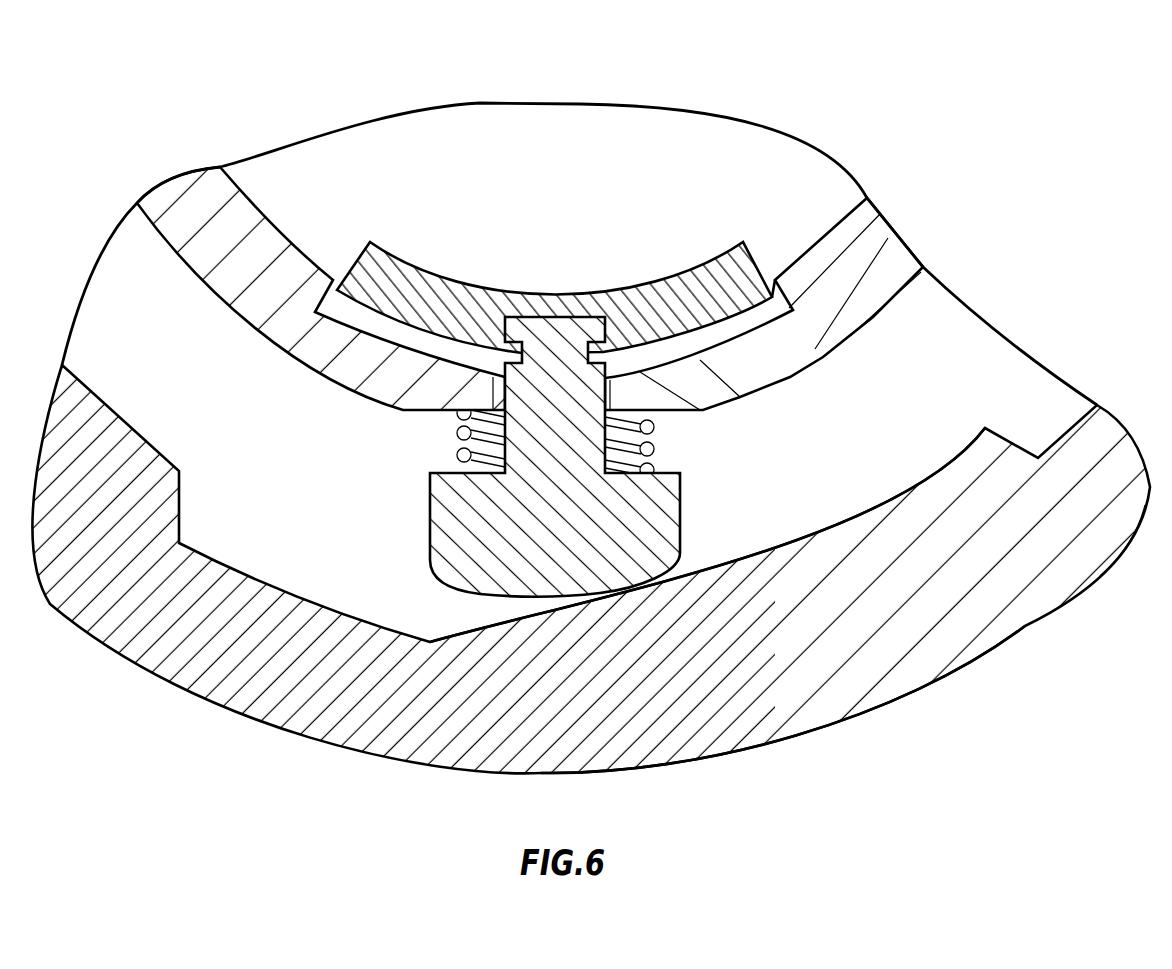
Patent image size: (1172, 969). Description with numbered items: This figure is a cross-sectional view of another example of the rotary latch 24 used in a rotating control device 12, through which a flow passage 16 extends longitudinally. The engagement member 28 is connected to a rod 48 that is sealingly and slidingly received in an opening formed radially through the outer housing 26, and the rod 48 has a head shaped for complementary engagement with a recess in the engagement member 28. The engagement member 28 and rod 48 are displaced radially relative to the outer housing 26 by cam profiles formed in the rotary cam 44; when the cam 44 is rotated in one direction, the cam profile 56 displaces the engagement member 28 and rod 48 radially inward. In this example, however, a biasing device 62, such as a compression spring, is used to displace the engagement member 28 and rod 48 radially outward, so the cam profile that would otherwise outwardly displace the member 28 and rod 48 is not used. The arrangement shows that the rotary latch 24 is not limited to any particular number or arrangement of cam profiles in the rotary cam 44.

The rotating control device 12 is at (925, 122).
The flow passage 16 is at (397, 150).
The rotary latch 24 is at (284, 740).
The outer housing 26 is at (893, 232).
The engagement member 28 is at (677, 278).
The rotary cam 44 is at (804, 737).
The rod 48 is at (656, 440).
The cam profile 56 is at (791, 537).
The biasing device 62 is at (452, 434).